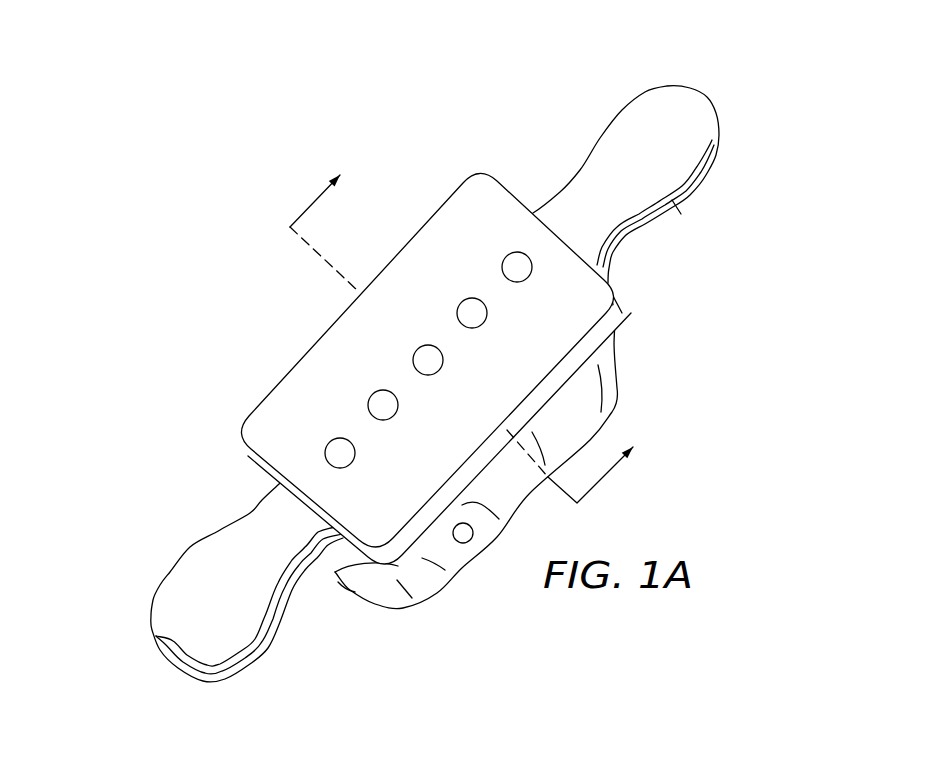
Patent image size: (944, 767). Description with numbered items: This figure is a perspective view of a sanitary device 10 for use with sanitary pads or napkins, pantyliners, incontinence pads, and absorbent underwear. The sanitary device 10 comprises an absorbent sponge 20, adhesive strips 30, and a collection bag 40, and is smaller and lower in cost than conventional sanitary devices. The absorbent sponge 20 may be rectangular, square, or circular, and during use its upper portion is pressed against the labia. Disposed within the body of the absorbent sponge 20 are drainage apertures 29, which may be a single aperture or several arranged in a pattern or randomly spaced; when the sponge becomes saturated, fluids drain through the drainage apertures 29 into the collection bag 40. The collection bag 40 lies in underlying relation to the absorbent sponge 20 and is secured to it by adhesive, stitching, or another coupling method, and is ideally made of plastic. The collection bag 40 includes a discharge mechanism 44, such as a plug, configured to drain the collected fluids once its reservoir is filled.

The sanitary device 10 is at (160, 74).
The absorbent sponge 20 is at (486, 368).
The drainage aperture 29 is at (325, 452).
The adhesive strips 30 is at (718, 150).
The collection bag 40 is at (543, 489).
The discharge mechanism 44 is at (467, 543).